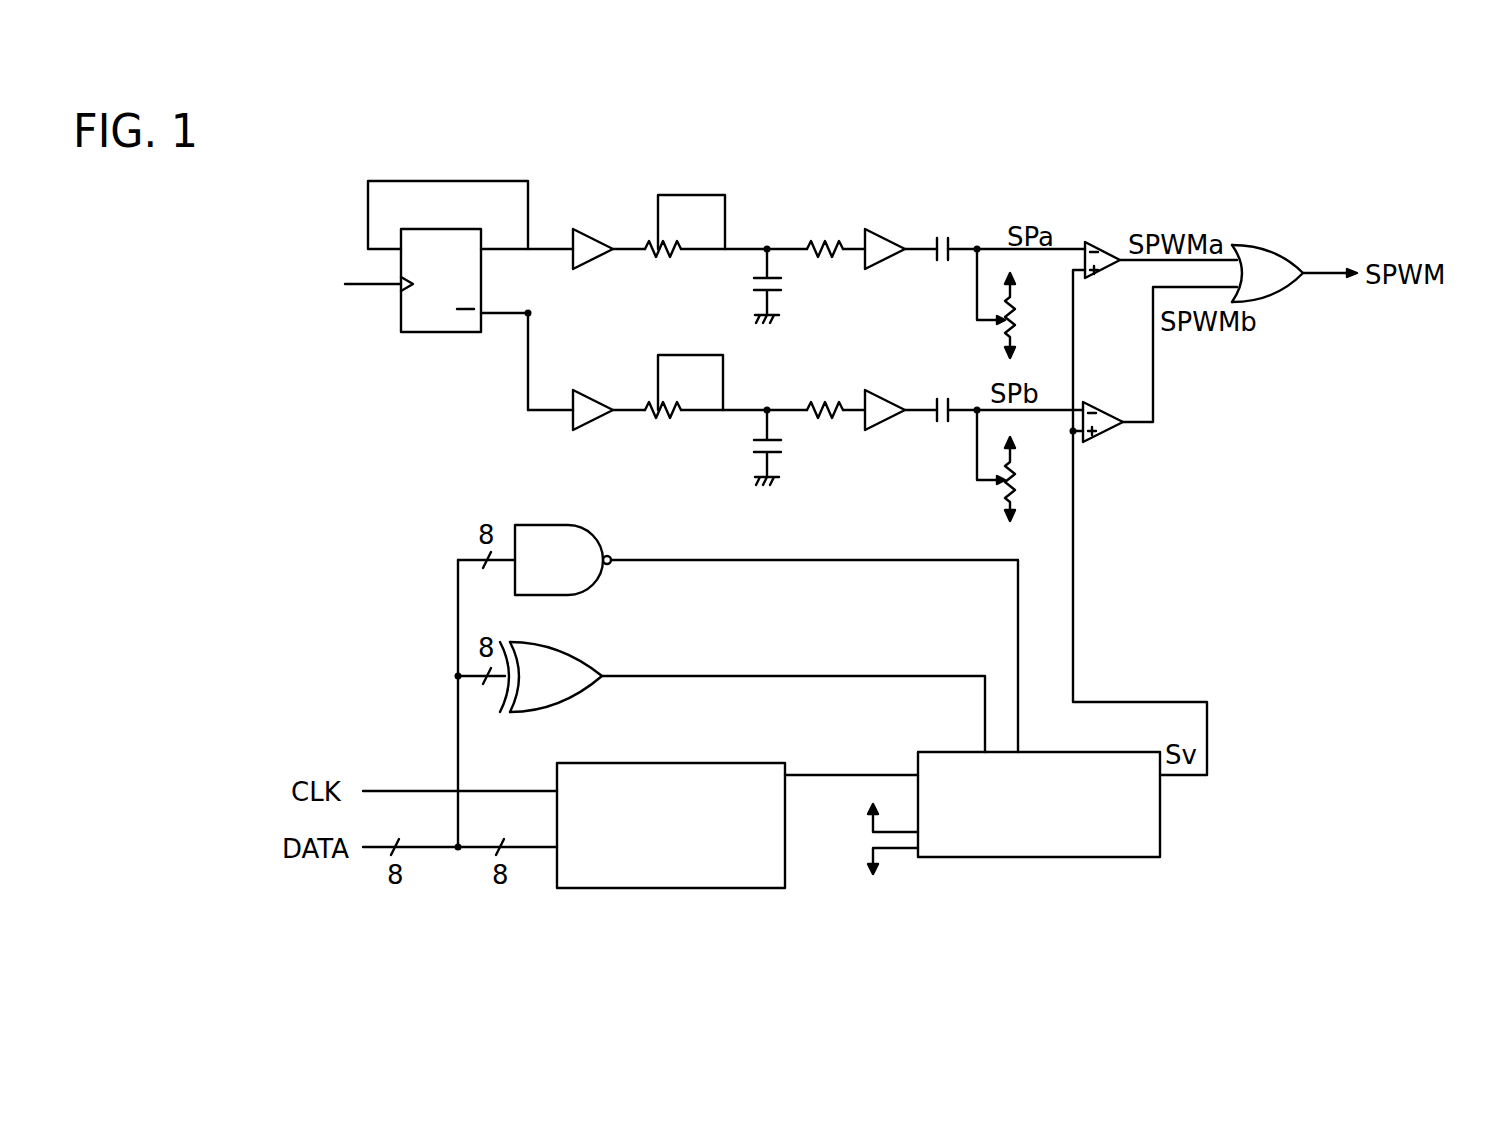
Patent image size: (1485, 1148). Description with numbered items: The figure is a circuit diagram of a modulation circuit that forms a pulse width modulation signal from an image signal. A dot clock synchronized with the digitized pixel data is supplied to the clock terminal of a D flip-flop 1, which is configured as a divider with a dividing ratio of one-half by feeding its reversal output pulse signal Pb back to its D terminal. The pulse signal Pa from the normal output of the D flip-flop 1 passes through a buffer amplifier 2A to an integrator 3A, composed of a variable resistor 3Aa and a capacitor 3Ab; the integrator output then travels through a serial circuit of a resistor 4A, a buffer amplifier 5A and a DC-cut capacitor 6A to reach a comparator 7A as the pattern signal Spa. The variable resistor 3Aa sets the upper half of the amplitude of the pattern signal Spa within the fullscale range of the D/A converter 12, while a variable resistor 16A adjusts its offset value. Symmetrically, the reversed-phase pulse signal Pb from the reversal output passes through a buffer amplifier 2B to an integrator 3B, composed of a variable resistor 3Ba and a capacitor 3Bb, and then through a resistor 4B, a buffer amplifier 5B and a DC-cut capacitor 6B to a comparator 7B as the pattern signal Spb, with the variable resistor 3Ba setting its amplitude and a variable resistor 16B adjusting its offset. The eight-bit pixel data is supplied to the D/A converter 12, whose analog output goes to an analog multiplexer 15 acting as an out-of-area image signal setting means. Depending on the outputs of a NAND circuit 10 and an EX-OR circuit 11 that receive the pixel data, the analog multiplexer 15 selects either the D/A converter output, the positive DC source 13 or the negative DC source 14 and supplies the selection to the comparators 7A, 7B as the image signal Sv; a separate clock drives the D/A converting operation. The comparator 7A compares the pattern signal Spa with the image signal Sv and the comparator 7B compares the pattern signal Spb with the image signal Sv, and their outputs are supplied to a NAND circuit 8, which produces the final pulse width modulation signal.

The D flip-flop 1 is at (441, 332).
The buffer amplifier 2A is at (583, 268).
The buffer amplifier 2B is at (580, 428).
The integrator 3A is at (755, 246).
The variable resistor 3Aa is at (660, 262).
The capacitor 3Ab is at (785, 284).
The integrator 3B is at (728, 408).
The variable resistor 3Ba is at (660, 422).
The capacitor 3Bb is at (785, 446).
The resistor 4A is at (813, 240).
The resistor 4B is at (816, 399).
The buffer amplifier 5A is at (881, 232).
The buffer amplifier 5B is at (881, 393).
The DC-cut capacitor 6A is at (942, 238).
The DC-cut capacitor 6B is at (942, 399).
The comparator 7A is at (1102, 242).
The comparator 7B is at (1112, 403).
The NAND circuit 8 is at (1287, 294).
The NAND circuit 10 is at (586, 529).
The EX-OR circuit 11 is at (568, 652).
The D/A converter 12 is at (655, 888).
The DC source +VB1 13 is at (870, 820).
The DC source -VB2 14 is at (867, 862).
The analog multiplexer 15 is at (1040, 857).
The variable resistor 16A is at (1026, 320).
The variable resistor 16B is at (1026, 480).